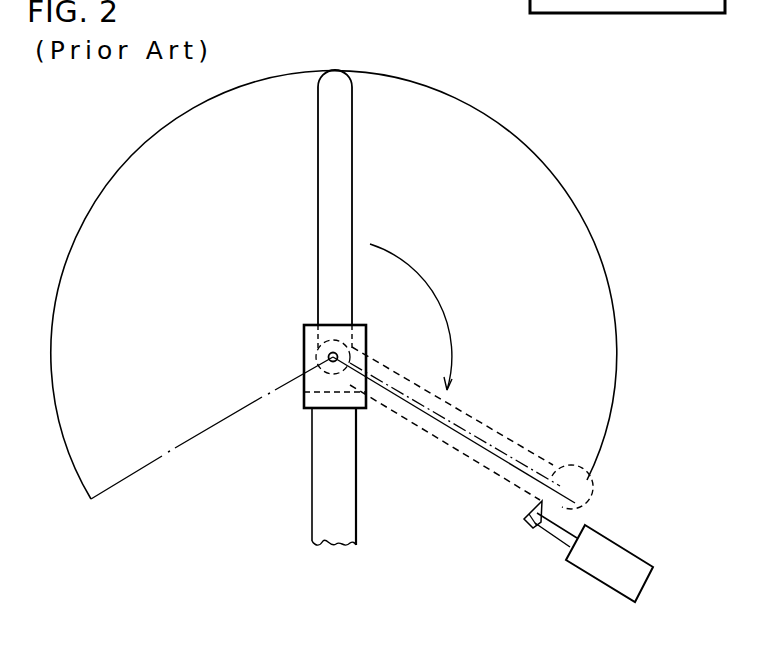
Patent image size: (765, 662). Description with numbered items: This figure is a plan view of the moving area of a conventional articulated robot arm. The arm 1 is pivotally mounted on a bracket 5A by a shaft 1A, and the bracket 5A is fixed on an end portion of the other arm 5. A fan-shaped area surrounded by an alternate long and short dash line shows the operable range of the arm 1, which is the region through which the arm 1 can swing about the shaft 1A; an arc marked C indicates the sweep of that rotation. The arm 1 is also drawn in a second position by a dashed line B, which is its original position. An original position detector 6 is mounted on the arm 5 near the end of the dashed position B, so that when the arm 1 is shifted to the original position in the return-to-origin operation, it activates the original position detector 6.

The arm 1 is at (327, 88).
The shaft 1A is at (330, 361).
The arm 5 is at (325, 518).
The bracket 5A is at (356, 399).
The original position detector 6 is at (612, 555).
The dashed line B is at (578, 495).
The rotation angle C is at (421, 317).